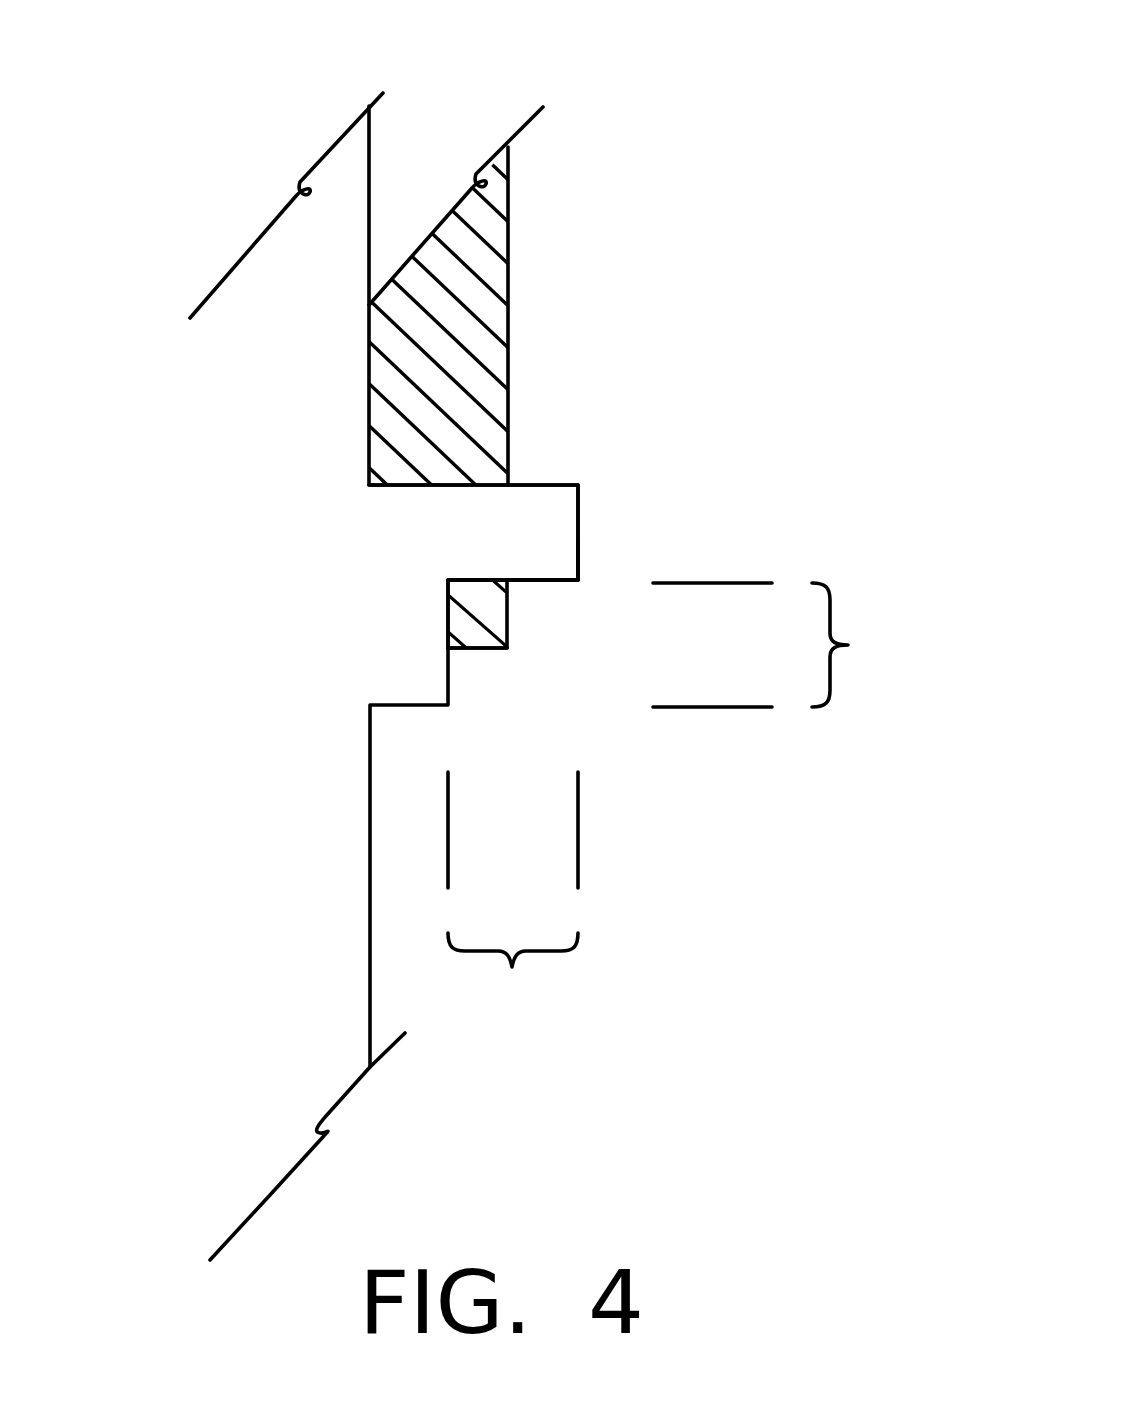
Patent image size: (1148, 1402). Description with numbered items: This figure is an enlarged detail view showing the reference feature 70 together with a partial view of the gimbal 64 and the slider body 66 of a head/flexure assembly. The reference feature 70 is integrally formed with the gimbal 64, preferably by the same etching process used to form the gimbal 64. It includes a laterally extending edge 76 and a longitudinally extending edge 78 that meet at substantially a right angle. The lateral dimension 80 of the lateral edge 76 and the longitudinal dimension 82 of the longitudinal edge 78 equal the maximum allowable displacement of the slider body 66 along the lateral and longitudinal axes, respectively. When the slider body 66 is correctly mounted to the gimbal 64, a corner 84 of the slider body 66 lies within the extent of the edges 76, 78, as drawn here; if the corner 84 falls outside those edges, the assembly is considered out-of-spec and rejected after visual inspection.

The gimbal 64 is at (332, 267).
The slider body 66 is at (480, 302).
The reference feature 70 is at (468, 520).
The laterally extending edge 76 is at (553, 580).
The longitudinally extending edge 78 is at (450, 645).
The lateral dimension 80 is at (513, 921).
The longitudinal dimension 82 is at (802, 645).
The corner 84 is at (507, 648).